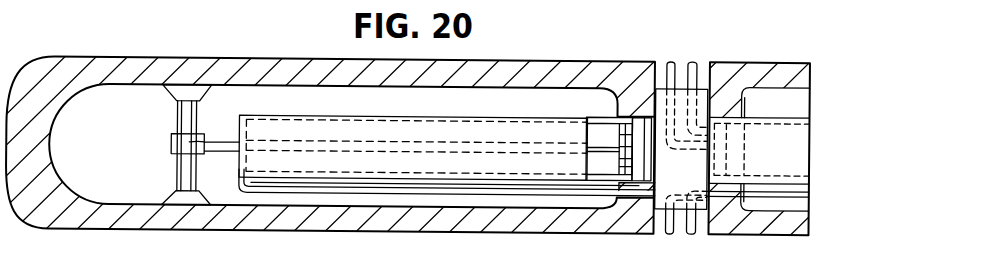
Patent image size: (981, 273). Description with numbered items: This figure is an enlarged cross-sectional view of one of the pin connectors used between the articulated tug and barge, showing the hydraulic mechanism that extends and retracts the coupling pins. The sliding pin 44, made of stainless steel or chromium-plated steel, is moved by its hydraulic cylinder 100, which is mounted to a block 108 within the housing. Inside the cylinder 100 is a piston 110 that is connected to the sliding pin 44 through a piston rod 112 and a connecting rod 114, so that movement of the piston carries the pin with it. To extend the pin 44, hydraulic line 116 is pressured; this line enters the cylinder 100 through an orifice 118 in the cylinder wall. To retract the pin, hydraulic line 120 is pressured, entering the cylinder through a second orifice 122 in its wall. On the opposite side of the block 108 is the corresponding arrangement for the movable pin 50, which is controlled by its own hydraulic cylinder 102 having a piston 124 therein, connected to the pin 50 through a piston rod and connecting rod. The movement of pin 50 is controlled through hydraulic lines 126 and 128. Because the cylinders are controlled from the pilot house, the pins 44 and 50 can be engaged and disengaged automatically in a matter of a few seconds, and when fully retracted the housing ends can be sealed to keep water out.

The sliding pin 44 is at (131, 57).
The movable pin 50 is at (781, 56).
The hydraulic cylinder 100 is at (393, 112).
The hydraulic cylinder 102 is at (780, 111).
The block 108 is at (697, 173).
The piston 110 is at (615, 122).
The piston rod 112 is at (228, 139).
The connecting rod 114 is at (182, 167).
The hydraulic line 116 is at (668, 58).
The orifice 118 is at (640, 130).
The hydraulic line 120 is at (668, 212).
The orifice 122 is at (238, 167).
The piston 124 is at (745, 139).
The hydraulic line 126 is at (697, 58).
The hydraulic line 128 is at (692, 215).